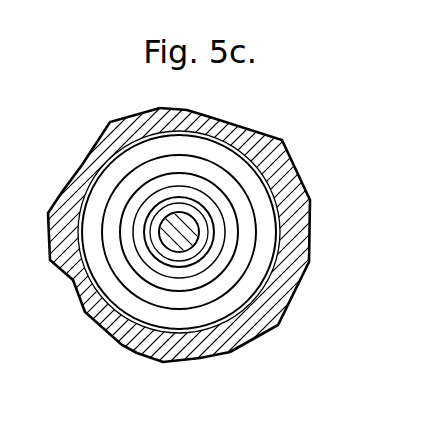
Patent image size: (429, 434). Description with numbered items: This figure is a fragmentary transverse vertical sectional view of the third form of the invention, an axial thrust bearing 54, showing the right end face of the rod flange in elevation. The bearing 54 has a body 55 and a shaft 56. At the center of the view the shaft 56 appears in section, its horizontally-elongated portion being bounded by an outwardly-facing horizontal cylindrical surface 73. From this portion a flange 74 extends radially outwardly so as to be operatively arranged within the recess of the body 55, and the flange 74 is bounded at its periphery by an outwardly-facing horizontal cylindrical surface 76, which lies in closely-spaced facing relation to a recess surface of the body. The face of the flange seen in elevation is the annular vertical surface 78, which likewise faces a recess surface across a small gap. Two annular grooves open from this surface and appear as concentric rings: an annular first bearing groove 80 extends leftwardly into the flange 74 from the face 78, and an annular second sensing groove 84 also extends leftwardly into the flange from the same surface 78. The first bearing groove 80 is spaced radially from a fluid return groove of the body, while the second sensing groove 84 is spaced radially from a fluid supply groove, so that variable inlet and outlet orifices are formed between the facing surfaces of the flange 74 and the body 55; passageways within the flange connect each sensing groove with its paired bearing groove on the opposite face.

The axial thrust bearing 54 is at (321, 189).
The body 55 is at (112, 126).
The shaft 56 is at (167, 249).
The outwardly-facing horizontal cylindrical surface 73 is at (200, 233).
The flange 74 is at (257, 130).
The outwardly-facing horizontal cylindrical surface 76 is at (197, 361).
The leftwardly-facing annular vertical surface 78 is at (150, 218).
The first bearing groove 80 is at (248, 261).
The second sensing groove 84 is at (195, 190).